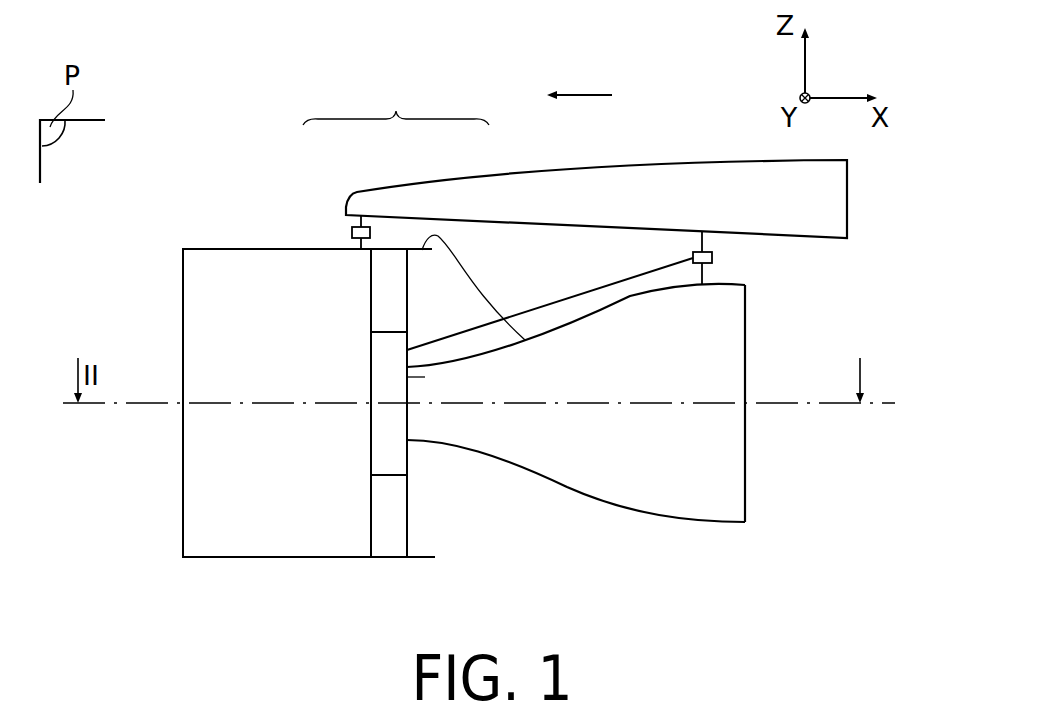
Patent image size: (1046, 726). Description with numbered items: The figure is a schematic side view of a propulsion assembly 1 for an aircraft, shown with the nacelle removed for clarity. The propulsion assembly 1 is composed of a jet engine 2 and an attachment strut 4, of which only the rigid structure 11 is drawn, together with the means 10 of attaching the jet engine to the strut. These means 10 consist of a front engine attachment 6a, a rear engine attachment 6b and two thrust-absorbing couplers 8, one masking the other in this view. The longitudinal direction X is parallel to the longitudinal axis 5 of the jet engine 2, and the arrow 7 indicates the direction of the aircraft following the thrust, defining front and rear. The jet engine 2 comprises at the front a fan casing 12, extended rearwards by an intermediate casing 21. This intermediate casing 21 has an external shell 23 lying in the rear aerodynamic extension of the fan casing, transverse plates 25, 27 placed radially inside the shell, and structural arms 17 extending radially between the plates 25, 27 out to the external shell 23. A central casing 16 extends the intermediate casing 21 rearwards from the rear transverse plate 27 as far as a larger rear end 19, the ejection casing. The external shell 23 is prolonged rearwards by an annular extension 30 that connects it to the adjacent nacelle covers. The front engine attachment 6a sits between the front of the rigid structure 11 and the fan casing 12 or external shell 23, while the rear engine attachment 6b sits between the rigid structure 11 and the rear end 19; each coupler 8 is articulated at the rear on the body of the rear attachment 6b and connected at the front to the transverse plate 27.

The propulsion assembly 1 is at (190, 133).
The jet engine 2 is at (148, 327).
The attachment strut 4 is at (634, 137).
The longitudinal axis 5 is at (862, 412).
The front engine attachment 6a is at (352, 233).
The rear engine attachment 6b is at (693, 253).
The arrow 7 is at (580, 93).
The coupler 8 is at (520, 313).
The means of attaching the jet engine to the strut 10 is at (396, 103).
The rigid structure 11 is at (835, 188).
The fan casing 12 is at (208, 250).
The central casing 16 is at (575, 475).
The structural arm 17 is at (380, 268).
The rear end 19 is at (715, 522).
The intermediate casing 21 is at (385, 562).
The external shell 23 is at (390, 250).
The transverse plate 25 is at (370, 367).
The transverse plate 27 is at (425, 377).
The annular extension 30 is at (527, 340).